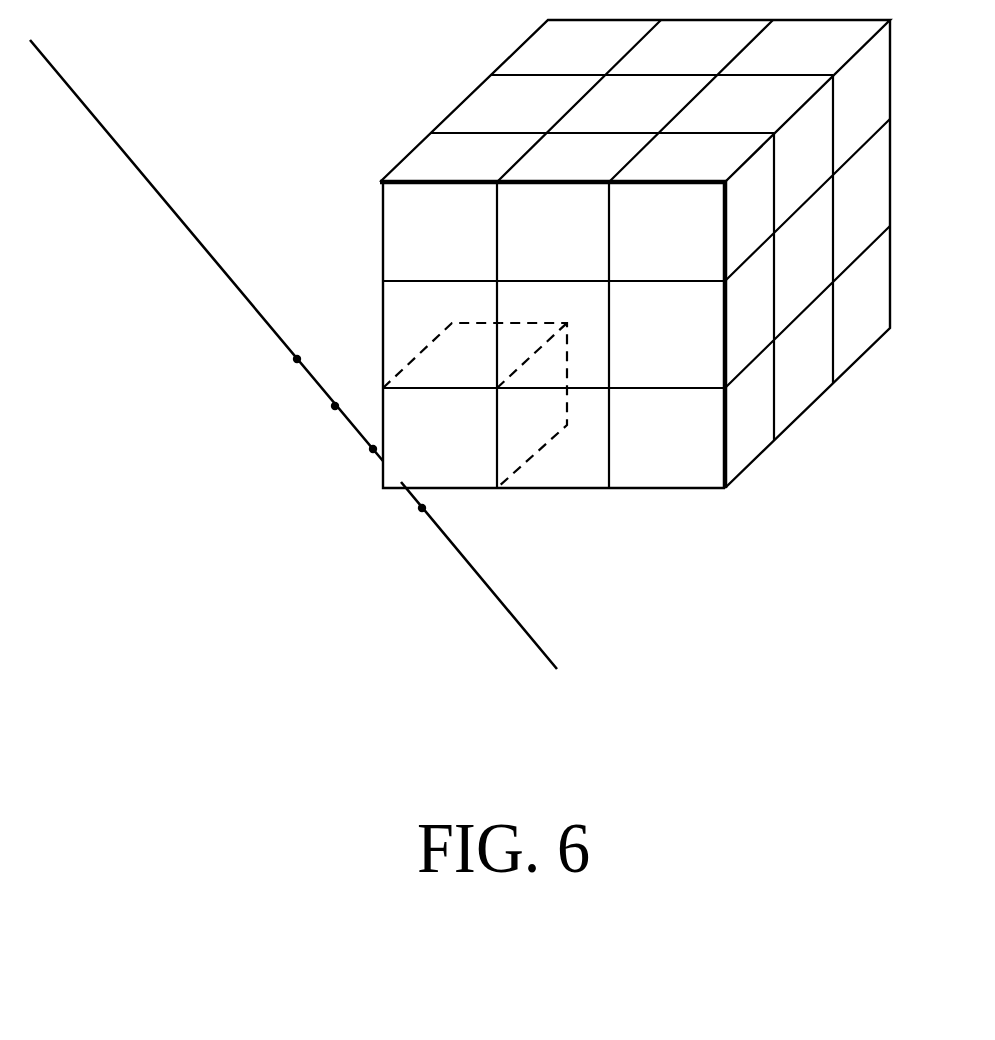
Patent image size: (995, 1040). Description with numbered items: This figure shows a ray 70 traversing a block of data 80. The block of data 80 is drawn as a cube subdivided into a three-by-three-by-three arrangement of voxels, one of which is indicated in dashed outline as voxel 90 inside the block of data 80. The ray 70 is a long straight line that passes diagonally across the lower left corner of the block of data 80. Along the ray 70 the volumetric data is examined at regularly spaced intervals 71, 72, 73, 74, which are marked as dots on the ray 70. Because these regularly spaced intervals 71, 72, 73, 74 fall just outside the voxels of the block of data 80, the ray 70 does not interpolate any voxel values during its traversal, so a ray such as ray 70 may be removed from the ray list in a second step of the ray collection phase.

The ray 70 is at (178, 217).
The regularly spaced interval 71 is at (295, 360).
The regularly spaced interval 72 is at (333, 407).
The regularly spaced interval 73 is at (371, 450).
The regularly spaced interval 74 is at (420, 509).
The block of data 80 is at (775, 442).
The voxel 90 is at (480, 490).